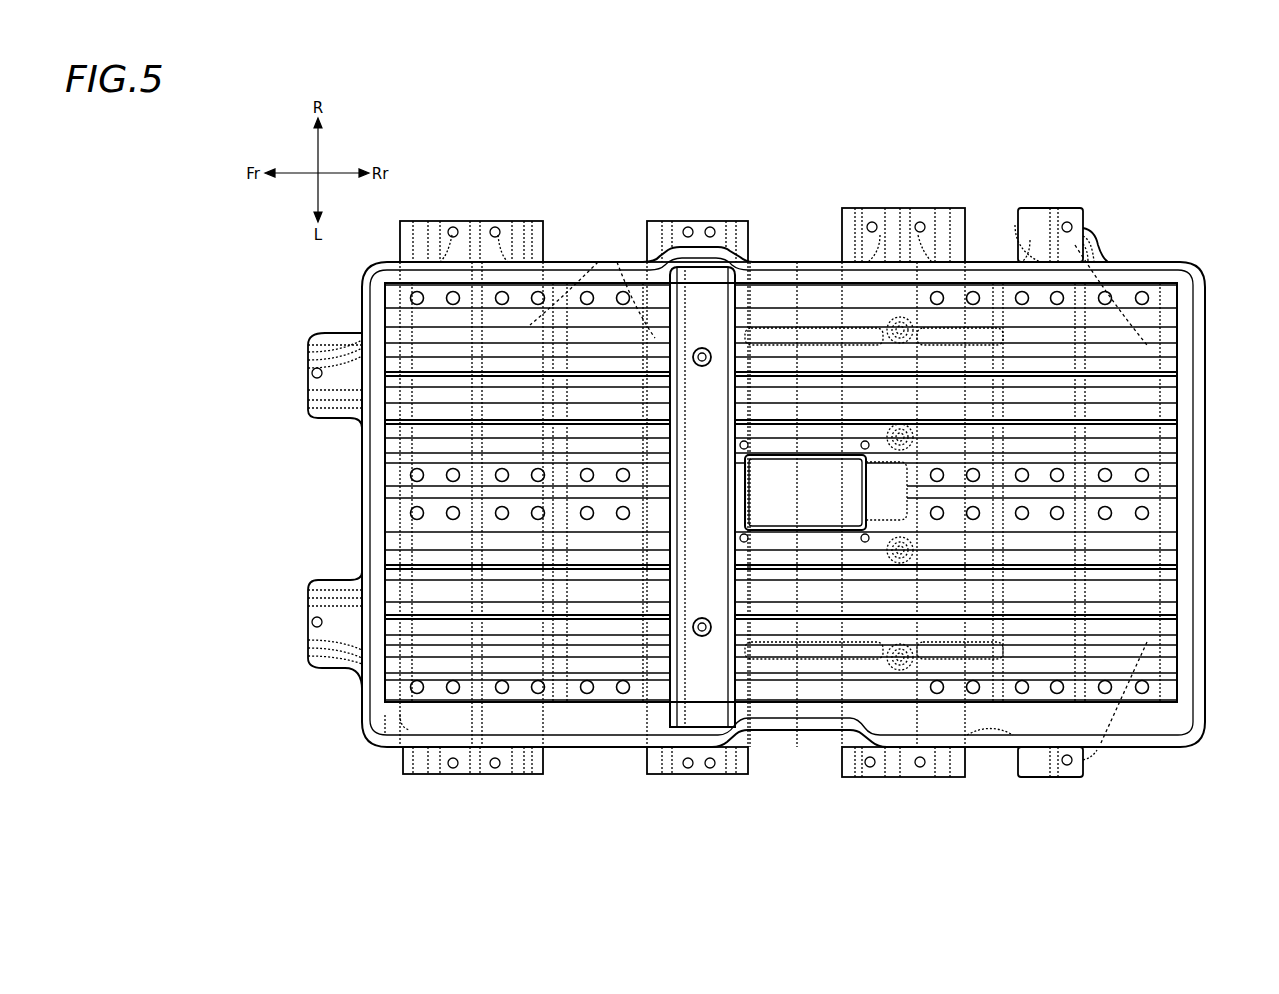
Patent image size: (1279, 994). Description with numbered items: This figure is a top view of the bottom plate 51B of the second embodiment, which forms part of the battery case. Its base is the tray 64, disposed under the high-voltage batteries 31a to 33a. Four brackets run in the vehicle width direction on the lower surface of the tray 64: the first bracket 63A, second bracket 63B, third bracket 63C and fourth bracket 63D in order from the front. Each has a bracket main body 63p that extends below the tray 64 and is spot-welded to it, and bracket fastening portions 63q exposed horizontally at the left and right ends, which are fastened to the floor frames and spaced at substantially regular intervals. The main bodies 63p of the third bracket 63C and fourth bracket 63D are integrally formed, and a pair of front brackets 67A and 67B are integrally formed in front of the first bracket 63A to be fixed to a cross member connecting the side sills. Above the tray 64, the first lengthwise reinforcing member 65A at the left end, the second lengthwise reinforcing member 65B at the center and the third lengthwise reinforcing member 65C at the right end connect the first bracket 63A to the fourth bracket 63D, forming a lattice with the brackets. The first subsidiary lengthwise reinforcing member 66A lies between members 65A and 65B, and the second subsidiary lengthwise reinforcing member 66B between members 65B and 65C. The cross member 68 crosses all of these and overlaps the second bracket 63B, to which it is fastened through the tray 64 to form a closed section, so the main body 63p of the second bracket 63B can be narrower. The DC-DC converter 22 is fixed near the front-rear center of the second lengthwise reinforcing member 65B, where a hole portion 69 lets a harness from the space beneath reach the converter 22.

The bottom plate 51B is at (1127, 197).
The first bracket 63A is at (520, 221).
The second bracket 63B is at (703, 221).
The third bracket 63C is at (895, 208).
The fourth bracket 63D is at (1065, 208).
The bracket main body 63p is at (617, 262).
The bracket fastening portions 63q is at (517, 770).
The tray 64 is at (593, 718).
The first lengthwise reinforcing member 65A is at (1170, 648).
The second lengthwise reinforcing member 65B is at (1170, 508).
The third lengthwise reinforcing member 65C is at (1170, 330).
The first subsidiary lengthwise reinforcing member 66A is at (1170, 588).
The second subsidiary lengthwise reinforcing member 66B is at (1170, 392).
The front bracket 67A is at (307, 624).
The front bracket 67B is at (307, 376).
The cross member 68 is at (705, 322).
The hole portion 69 is at (828, 535).
The DC-DC converter 22 is at (840, 510).
The high-voltage batteries 31a is at (360, 464).
The high-voltage batteries 33a is at (1163, 462).